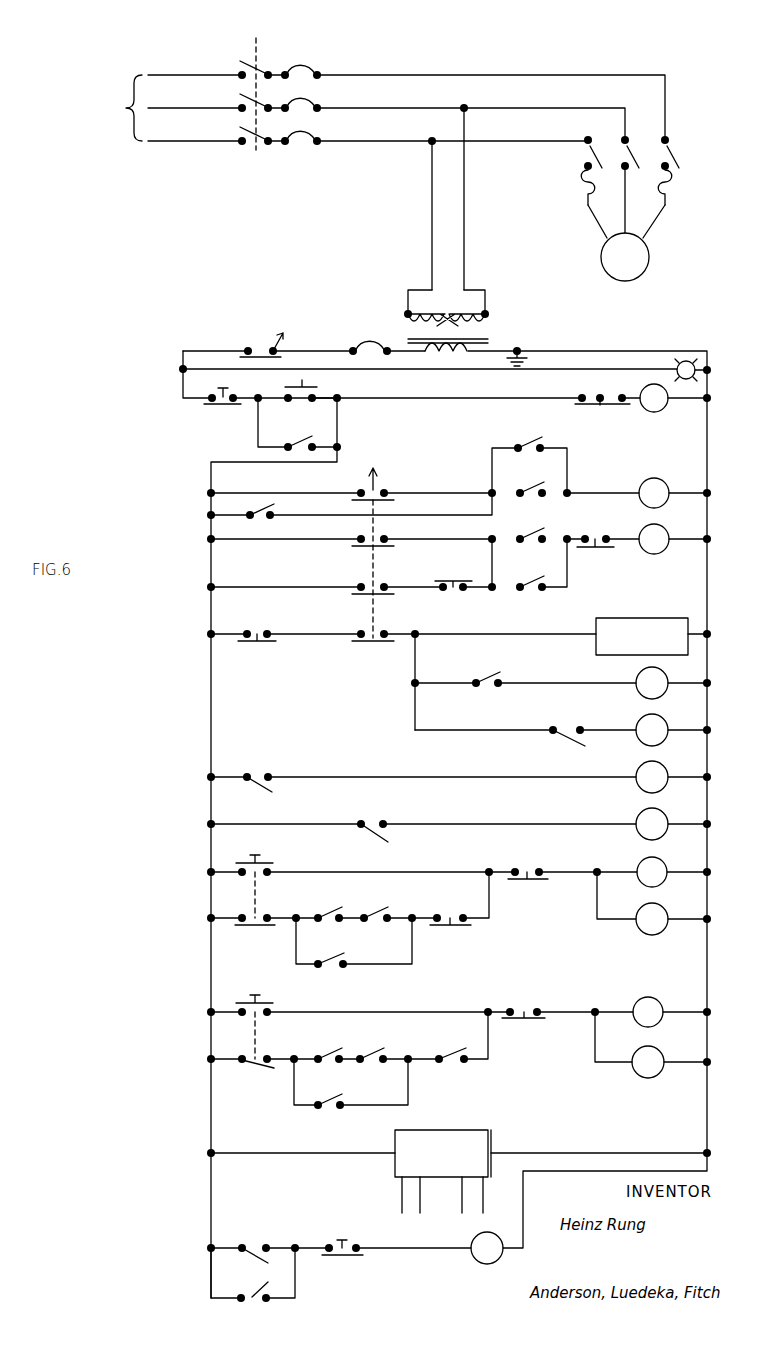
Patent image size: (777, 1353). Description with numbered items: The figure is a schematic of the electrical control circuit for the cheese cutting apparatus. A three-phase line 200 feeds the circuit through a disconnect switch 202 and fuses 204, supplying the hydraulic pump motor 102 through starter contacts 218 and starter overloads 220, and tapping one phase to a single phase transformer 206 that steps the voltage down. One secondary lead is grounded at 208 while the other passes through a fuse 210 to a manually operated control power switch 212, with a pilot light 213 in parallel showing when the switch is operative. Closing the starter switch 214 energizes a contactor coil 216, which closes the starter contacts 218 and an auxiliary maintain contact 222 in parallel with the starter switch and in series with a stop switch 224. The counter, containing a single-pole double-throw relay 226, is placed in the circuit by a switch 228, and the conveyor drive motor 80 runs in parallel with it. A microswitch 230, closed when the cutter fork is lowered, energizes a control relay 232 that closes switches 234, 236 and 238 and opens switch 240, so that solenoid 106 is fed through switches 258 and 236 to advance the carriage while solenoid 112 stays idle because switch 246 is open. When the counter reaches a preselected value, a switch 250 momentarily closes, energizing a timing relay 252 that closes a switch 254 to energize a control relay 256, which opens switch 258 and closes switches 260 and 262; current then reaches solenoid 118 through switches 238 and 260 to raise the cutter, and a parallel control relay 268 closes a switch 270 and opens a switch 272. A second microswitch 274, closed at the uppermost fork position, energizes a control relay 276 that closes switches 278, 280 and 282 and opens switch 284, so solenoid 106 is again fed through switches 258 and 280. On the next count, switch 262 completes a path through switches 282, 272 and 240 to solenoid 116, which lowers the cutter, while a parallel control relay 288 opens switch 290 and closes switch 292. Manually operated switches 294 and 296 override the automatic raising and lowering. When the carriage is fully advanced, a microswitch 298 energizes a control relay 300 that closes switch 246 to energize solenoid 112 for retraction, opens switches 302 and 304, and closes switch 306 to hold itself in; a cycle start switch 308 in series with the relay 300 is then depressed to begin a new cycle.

The three-phase line 200 is at (166, 108).
The disconnect switch 202 is at (260, 48).
The fuses 204 is at (308, 72).
The starter contacts 218 is at (674, 152).
The starter overloads 220 is at (668, 184).
The hydraulic pump motor 102 is at (648, 253).
The single phase transformer 206 is at (494, 324).
The ground 208 is at (520, 348).
The fuse 210 is at (366, 350).
The control power switch 212 is at (248, 350).
The pilot light 213 is at (686, 358).
The starter switch 214 is at (318, 388).
The contactor coil 216 is at (596, 404).
The auxiliary maintain contact 222 is at (294, 446).
The stop switch 224 is at (212, 404).
The single-pole, double-throw relay 226 is at (630, 618).
The switch 228 is at (374, 478).
The microswitch 230 is at (260, 792).
The control relay 232 is at (636, 774).
The normally open switch 234 is at (516, 446).
The normally open switch 236 is at (529, 526).
The normally open switch 238 is at (374, 914).
The normally closed switch 240 is at (544, 1020).
The normally open switch 246 is at (252, 512).
The switch 250 is at (484, 680).
The timing relay 252 is at (636, 680).
The switch 254 is at (562, 742).
The control relay 256 is at (636, 728).
The normally closed switch 258 is at (446, 586).
The normally open switch 260 is at (320, 916).
The normally open switch 262 is at (324, 1058).
The control relay 268 is at (668, 908).
The normally open switch 270 is at (330, 964).
The normally closed switch 272 is at (450, 1056).
The microswitch 274 is at (370, 840).
The control relay 276 is at (634, 820).
The normally open switch 278 is at (522, 490).
The normally open switch 280 is at (522, 586).
The normally open switch 282 is at (362, 1058).
The normally closed switch 284 is at (546, 878).
The control relay 288 is at (632, 1058).
The normally closed switch 290 is at (458, 925).
The normally open switch 292 is at (328, 1104).
The manually operated switch 294 is at (266, 862).
The manually operated switch 296 is at (262, 1002).
The microswitch 298 is at (259, 1269).
The control relay 300 is at (472, 1242).
The normally closed switch 302 is at (594, 546).
The normally closed switch 304 is at (262, 642).
The normally open switch 306 is at (254, 1302).
The cycle start switch 308 is at (350, 1258).
The solenoid 112 is at (656, 480).
The solenoid 106 is at (656, 554).
The solenoid 118 is at (666, 866).
The solenoid 116 is at (650, 996).
The conveyor drive motor 80 is at (456, 1142).